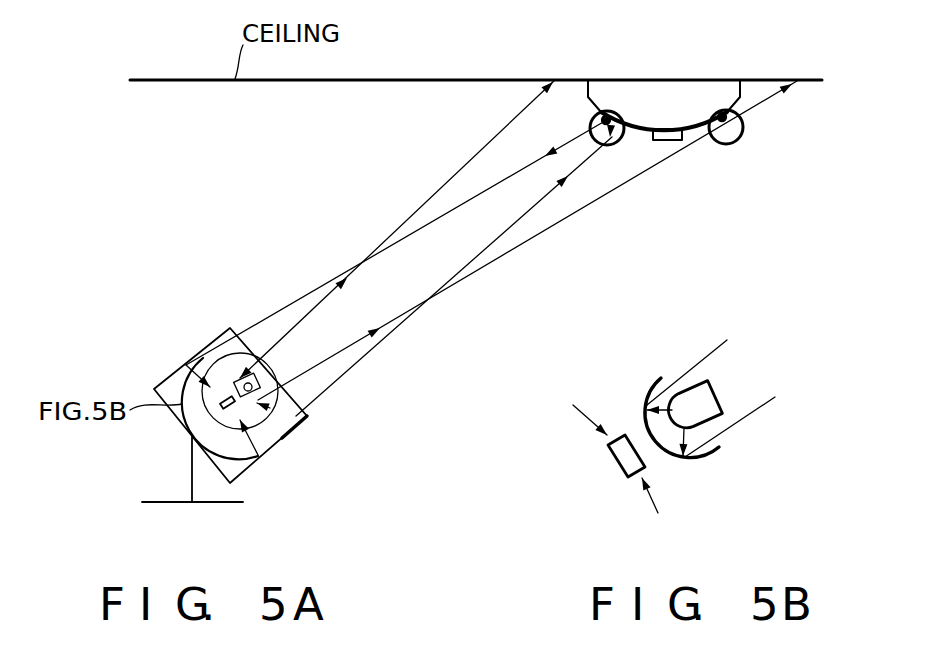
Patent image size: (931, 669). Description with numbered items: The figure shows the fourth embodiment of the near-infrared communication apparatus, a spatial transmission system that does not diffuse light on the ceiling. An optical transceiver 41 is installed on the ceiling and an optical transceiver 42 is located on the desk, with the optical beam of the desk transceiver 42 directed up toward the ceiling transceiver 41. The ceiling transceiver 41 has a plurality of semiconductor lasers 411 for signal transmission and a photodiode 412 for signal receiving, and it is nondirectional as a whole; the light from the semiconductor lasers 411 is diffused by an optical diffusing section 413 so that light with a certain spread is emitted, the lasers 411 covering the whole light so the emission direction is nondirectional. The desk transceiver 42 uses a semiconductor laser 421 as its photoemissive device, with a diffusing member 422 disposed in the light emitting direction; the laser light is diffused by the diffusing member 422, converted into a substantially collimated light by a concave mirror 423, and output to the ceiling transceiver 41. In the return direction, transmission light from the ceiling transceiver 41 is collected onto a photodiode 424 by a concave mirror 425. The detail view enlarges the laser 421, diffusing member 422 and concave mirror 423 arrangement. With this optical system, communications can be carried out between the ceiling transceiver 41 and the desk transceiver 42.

The optical transceiver 41 is at (671, 95).
The semiconductor lasers 411 is at (605, 115).
The photodiode 412 is at (668, 142).
The optical diffusing section 413 is at (743, 139).
The optical transceiver 42 is at (190, 462).
The semiconductor laser 421 is at (240, 376).
The diffusing member 422 is at (205, 365).
The concave mirror 423 is at (265, 400).
The photodiode 424 is at (282, 437).
The concave mirror 425 is at (248, 470).